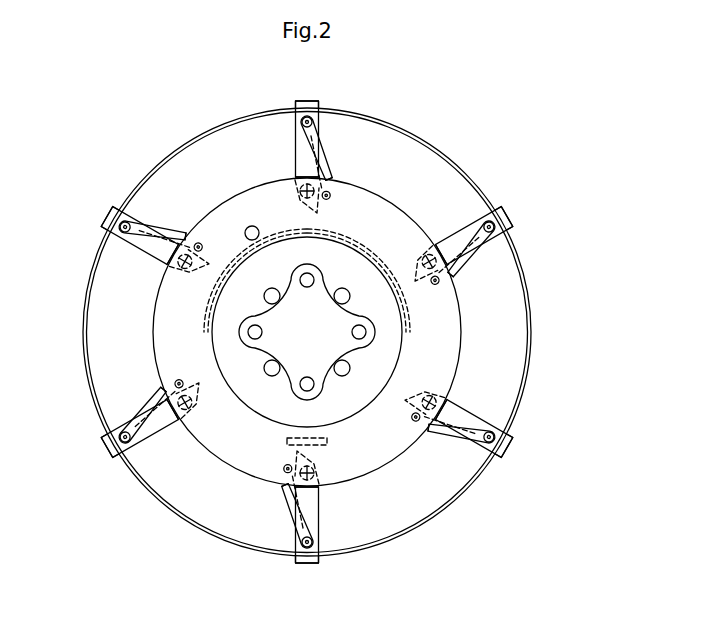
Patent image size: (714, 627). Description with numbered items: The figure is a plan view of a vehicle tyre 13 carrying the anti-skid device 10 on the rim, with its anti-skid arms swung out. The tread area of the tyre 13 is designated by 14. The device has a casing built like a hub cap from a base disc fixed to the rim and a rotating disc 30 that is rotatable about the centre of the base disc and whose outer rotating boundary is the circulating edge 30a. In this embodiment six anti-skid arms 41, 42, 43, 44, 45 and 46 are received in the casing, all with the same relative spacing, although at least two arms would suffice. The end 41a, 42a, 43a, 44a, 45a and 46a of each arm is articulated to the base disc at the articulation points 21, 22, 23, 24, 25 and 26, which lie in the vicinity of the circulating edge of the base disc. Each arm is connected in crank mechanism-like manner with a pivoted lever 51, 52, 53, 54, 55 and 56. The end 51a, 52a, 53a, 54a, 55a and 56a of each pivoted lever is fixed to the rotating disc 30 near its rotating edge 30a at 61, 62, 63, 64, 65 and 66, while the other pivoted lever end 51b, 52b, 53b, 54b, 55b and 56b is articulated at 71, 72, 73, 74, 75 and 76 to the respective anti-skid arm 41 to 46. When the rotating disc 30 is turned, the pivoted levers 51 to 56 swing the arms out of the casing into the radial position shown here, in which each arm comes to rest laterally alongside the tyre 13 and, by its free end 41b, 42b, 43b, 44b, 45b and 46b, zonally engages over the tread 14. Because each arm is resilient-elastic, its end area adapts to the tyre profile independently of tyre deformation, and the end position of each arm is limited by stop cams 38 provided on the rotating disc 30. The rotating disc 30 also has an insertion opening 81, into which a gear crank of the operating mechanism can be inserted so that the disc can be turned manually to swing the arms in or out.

The anti-skid device 10 is at (437, 326).
The tyre 13 is at (398, 133).
The tread 14 is at (437, 143).
The articulation point 21 is at (428, 248).
The articulation point 22 is at (296, 178).
The articulation point 23 is at (165, 263).
The articulation point 24 is at (168, 415).
The articulation point 25 is at (318, 483).
The articulation point 26 is at (446, 397).
The rotating disc 30 is at (375, 458).
The circulating edge of rotating disc 30a is at (403, 457).
The stop cams 38 is at (326, 441).
The anti-skid arm 41 is at (467, 233).
The anti-skid arm 42 is at (297, 130).
The anti-skid arm 43 is at (138, 242).
The anti-skid arm 44 is at (147, 440).
The anti-skid arm 45 is at (318, 517).
The anti-skid arm 46 is at (477, 423).
The end of anti-skid arm 41a is at (418, 256).
The end of anti-skid arm 42a is at (299, 199).
The end of anti-skid arm 43a is at (193, 273).
The end of anti-skid arm 44a is at (197, 393).
The end of anti-skid arm 45a is at (312, 463).
The end of anti-skid arm 46a is at (423, 392).
The free end of anti-skid arm 41b is at (503, 222).
The free end of anti-skid arm 42b is at (300, 104).
The free end of anti-skid arm 43b is at (105, 213).
The free end of anti-skid arm 44b is at (103, 447).
The free end of anti-skid arm 45b is at (305, 567).
The free end of anti-skid arm 46b is at (512, 452).
The pivoted lever 51 is at (472, 255).
The pivoted lever 52 is at (323, 163).
The pivoted lever 53 is at (161, 228).
The pivoted lever 54 is at (143, 408).
The pivoted lever 55 is at (298, 520).
The pivoted lever 56 is at (466, 446).
The end of pivoted lever 51a is at (447, 278).
The end of pivoted lever 52a is at (331, 179).
The end of pivoted lever 53a is at (196, 237).
The end of pivoted lever 54a is at (165, 392).
The end of pivoted lever 55a is at (285, 478).
The end of pivoted lever 56a is at (445, 432).
The other end of pivoted lever 51b is at (510, 238).
The other end of pivoted lever 52b is at (321, 117).
The other end of pivoted lever 53b is at (122, 206).
The other end of pivoted lever 54b is at (117, 430).
The other end of pivoted lever 55b is at (293, 553).
The other end of pivoted lever 56b is at (496, 459).
The fixing point on rotating disc 61 is at (435, 285).
The fixing point on rotating disc 62 is at (329, 198).
The fixing point on rotating disc 63 is at (202, 245).
The fixing point on rotating disc 64 is at (177, 377).
The fixing point on rotating disc 65 is at (284, 468).
The fixing point on rotating disc 66 is at (412, 420).
The articulation point on anti-skid arm 71 is at (492, 222).
The articulation point on anti-skid arm 72 is at (310, 117).
The articulation point on anti-skid arm 73 is at (122, 224).
The articulation point on anti-skid arm 74 is at (123, 452).
The articulation point on anti-skid arm 75 is at (319, 556).
The articulation point on anti-skid arm 76 is at (497, 440).
The insertion opening 81 is at (248, 229).